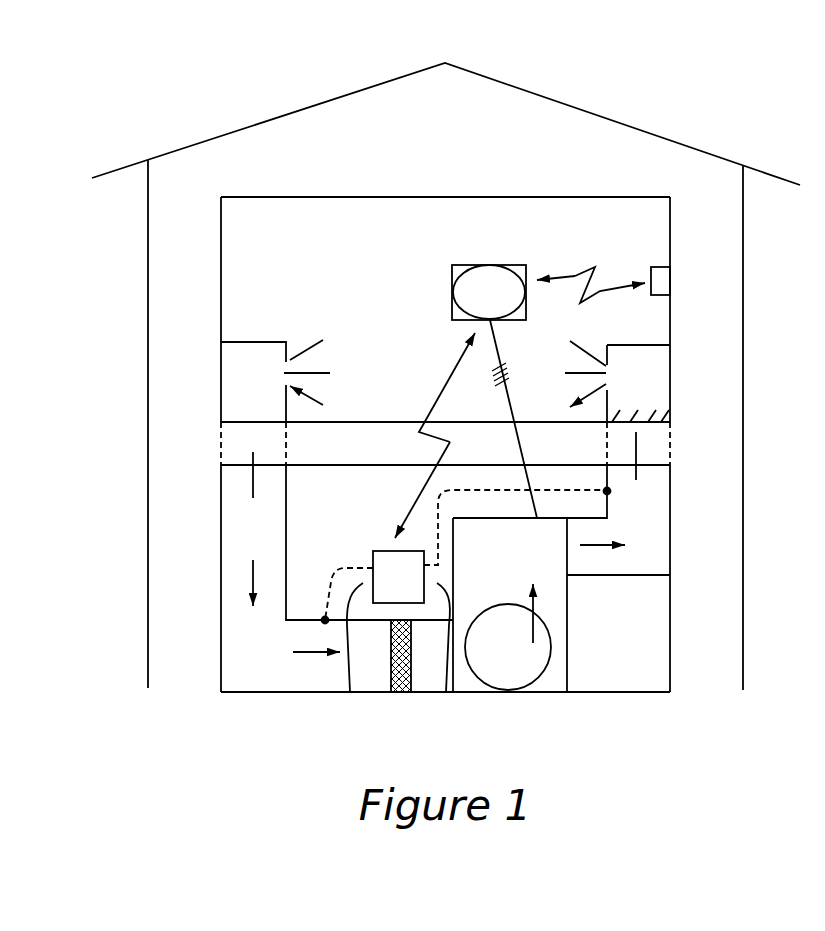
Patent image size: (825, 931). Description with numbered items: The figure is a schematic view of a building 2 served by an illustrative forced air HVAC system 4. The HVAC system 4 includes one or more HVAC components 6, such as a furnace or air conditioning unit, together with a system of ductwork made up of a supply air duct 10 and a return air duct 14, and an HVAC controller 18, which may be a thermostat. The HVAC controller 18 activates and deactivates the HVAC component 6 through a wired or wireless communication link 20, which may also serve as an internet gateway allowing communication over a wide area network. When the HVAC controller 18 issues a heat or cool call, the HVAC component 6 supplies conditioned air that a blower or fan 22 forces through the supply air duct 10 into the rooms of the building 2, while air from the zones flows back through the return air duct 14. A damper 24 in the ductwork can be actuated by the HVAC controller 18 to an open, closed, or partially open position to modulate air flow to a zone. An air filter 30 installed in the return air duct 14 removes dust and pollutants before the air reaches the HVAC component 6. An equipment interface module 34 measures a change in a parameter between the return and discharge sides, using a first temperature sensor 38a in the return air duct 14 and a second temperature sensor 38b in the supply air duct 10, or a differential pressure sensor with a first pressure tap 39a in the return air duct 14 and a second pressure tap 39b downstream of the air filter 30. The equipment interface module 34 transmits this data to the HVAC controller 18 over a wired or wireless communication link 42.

The building 2 is at (623, 121).
The HVAC system 4 is at (640, 664).
The HVAC component 6 is at (568, 637).
The supply air duct 10 is at (637, 533).
The return air duct 14 is at (245, 533).
The HVAC controller 18 is at (490, 265).
The wired or wireless communication link 20 is at (663, 282).
The blower or fan 22 is at (540, 678).
The damper 24 is at (668, 420).
The air filter 30 is at (400, 692).
The equipment interface module 34 is at (380, 551).
The first temperature sensor 38a is at (325, 620).
The second temperature sensor 38b is at (607, 492).
The first pressure tap 39a is at (350, 692).
The second pressure tap 39b is at (446, 692).
The wired or wireless communication link 42 is at (448, 377).